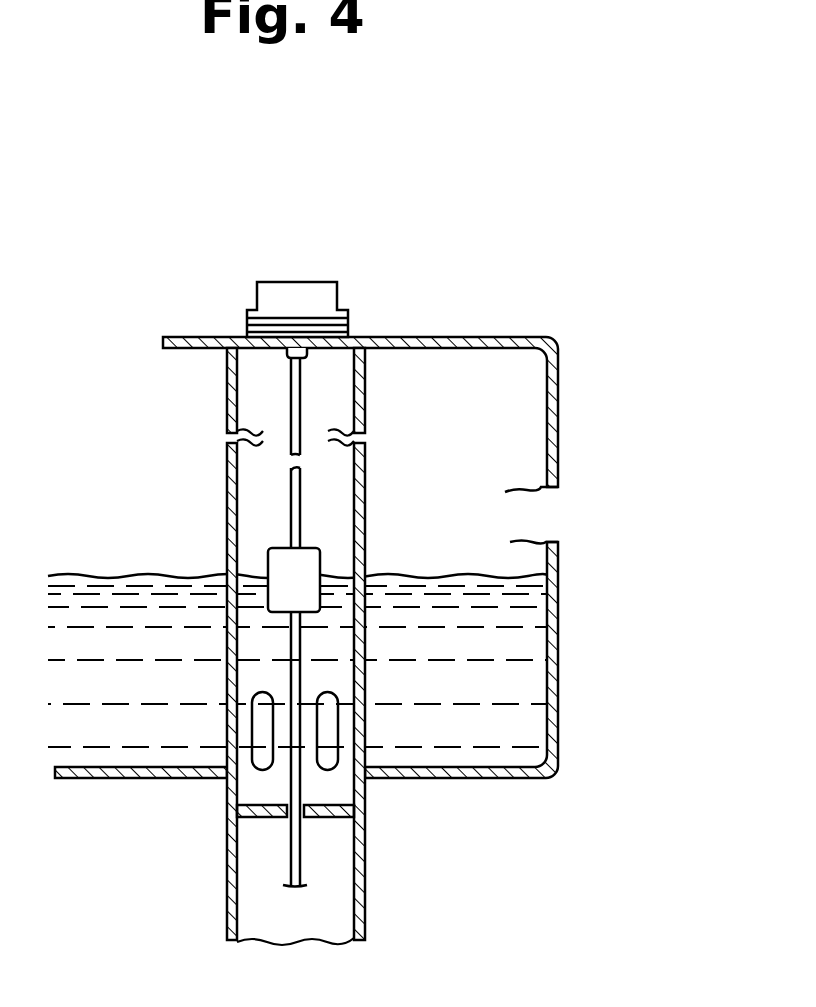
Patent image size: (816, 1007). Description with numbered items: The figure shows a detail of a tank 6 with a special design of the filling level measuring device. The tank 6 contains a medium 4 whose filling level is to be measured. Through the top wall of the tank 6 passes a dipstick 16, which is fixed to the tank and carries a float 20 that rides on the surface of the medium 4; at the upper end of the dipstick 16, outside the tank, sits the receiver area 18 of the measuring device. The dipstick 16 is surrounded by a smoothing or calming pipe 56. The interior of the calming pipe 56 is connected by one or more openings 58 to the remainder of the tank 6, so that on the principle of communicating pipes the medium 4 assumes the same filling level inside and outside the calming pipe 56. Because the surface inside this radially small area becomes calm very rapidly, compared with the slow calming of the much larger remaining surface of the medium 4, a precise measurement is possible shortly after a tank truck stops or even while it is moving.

The medium 4 is at (507, 688).
The tank 6 is at (473, 337).
The dipstick 16 is at (297, 507).
The receiver area 18 is at (288, 300).
The float 20 is at (307, 566).
The calming pipe 56 is at (228, 455).
The openings 58 is at (327, 758).